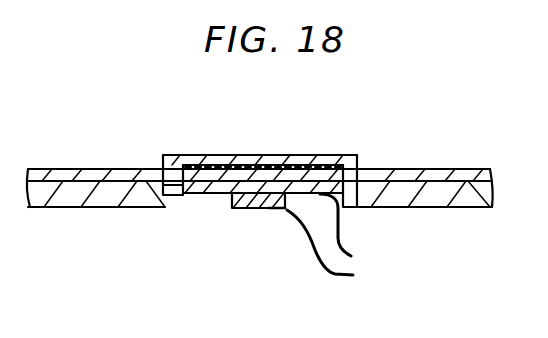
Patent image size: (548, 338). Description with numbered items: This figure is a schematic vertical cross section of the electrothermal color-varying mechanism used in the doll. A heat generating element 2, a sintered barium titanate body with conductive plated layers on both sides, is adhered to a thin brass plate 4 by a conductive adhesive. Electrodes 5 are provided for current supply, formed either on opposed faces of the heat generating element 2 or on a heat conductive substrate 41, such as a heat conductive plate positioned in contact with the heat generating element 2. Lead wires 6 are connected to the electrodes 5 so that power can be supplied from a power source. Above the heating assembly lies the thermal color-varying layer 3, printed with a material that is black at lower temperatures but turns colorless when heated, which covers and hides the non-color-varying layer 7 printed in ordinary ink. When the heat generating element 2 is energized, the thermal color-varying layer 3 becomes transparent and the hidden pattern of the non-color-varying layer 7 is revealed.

The heat generating element 2 is at (232, 208).
The thermal color-varying layer 3 is at (198, 154).
The brass plate 4 is at (384, 169).
The electrode 5 is at (275, 210).
The lead wire 6 is at (342, 250).
The non-color-varying layer 7 is at (286, 166).
The heat conductive substrate 41 is at (186, 196).